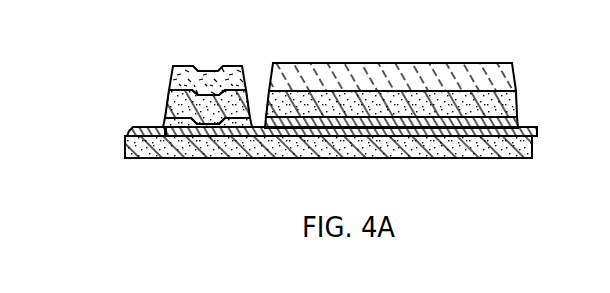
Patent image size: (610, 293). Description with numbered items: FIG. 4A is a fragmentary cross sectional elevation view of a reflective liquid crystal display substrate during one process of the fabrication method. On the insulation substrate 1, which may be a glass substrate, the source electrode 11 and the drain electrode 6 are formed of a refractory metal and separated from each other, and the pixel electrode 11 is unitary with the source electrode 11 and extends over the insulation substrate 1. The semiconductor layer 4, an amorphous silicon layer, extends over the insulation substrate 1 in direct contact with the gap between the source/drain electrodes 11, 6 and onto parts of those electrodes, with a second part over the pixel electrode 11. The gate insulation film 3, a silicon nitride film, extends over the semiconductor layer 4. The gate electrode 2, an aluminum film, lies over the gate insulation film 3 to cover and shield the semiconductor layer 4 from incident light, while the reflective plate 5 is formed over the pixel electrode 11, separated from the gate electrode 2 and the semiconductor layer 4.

The insulation substrate 1 is at (516, 159).
The gate electrode 2 is at (171, 70).
The gate insulation film 3 is at (168, 103).
The semiconductor layer 4 is at (165, 125).
The reflective plate 5 is at (513, 63).
The drain electrode 6 is at (138, 131).
The source electrode and pixel electrode 11 is at (535, 131).